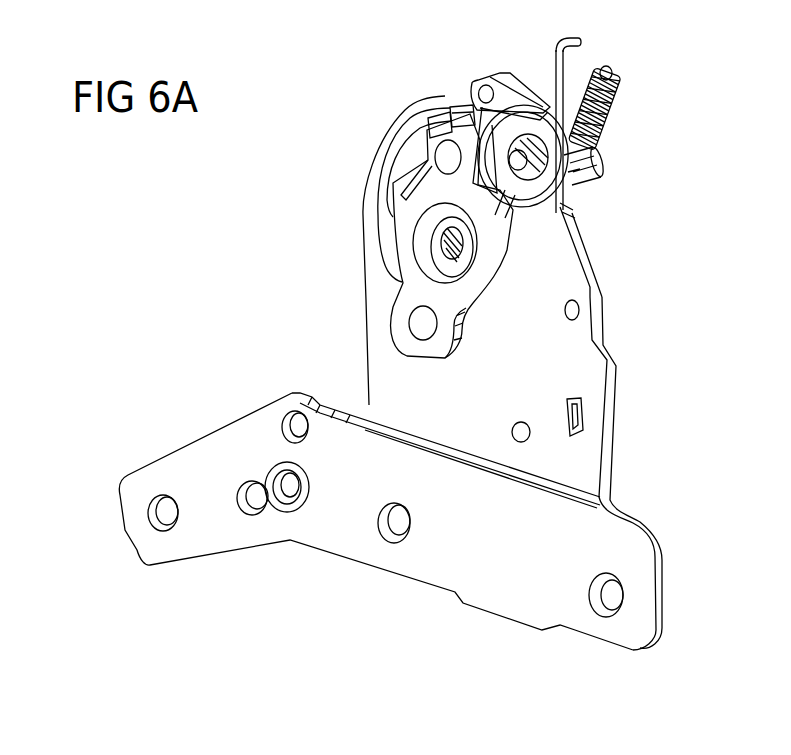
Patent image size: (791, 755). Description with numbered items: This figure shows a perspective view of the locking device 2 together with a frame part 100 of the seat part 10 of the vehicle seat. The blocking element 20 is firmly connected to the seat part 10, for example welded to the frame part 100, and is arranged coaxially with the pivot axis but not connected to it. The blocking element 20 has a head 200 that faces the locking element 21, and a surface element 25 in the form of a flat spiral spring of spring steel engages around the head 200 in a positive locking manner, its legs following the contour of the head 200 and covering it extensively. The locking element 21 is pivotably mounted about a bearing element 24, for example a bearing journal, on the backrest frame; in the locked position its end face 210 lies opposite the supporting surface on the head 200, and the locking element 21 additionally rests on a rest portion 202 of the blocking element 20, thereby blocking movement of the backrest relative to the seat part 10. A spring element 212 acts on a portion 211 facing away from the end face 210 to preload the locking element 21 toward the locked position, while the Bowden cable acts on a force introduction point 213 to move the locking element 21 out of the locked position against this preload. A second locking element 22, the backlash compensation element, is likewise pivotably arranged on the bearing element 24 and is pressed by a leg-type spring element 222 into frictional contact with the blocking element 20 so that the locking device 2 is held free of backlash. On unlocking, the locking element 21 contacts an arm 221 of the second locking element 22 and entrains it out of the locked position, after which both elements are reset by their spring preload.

The locking device 2 is at (357, 252).
The seat part 10 is at (226, 562).
The frame part 100 is at (197, 467).
The blocking element 20 is at (410, 225).
The head 200 is at (415, 133).
The rest portion 202 is at (566, 203).
The locking element 21 is at (497, 107).
The end face 210 is at (466, 108).
The portion 211 is at (590, 177).
The spring element 212 is at (611, 110).
The force introduction point 213 is at (484, 84).
The second locking element 22 is at (457, 108).
The arm 221 is at (520, 93).
The spring element 222 is at (566, 60).
The bearing element 24 is at (537, 153).
The surface element 25 is at (440, 114).